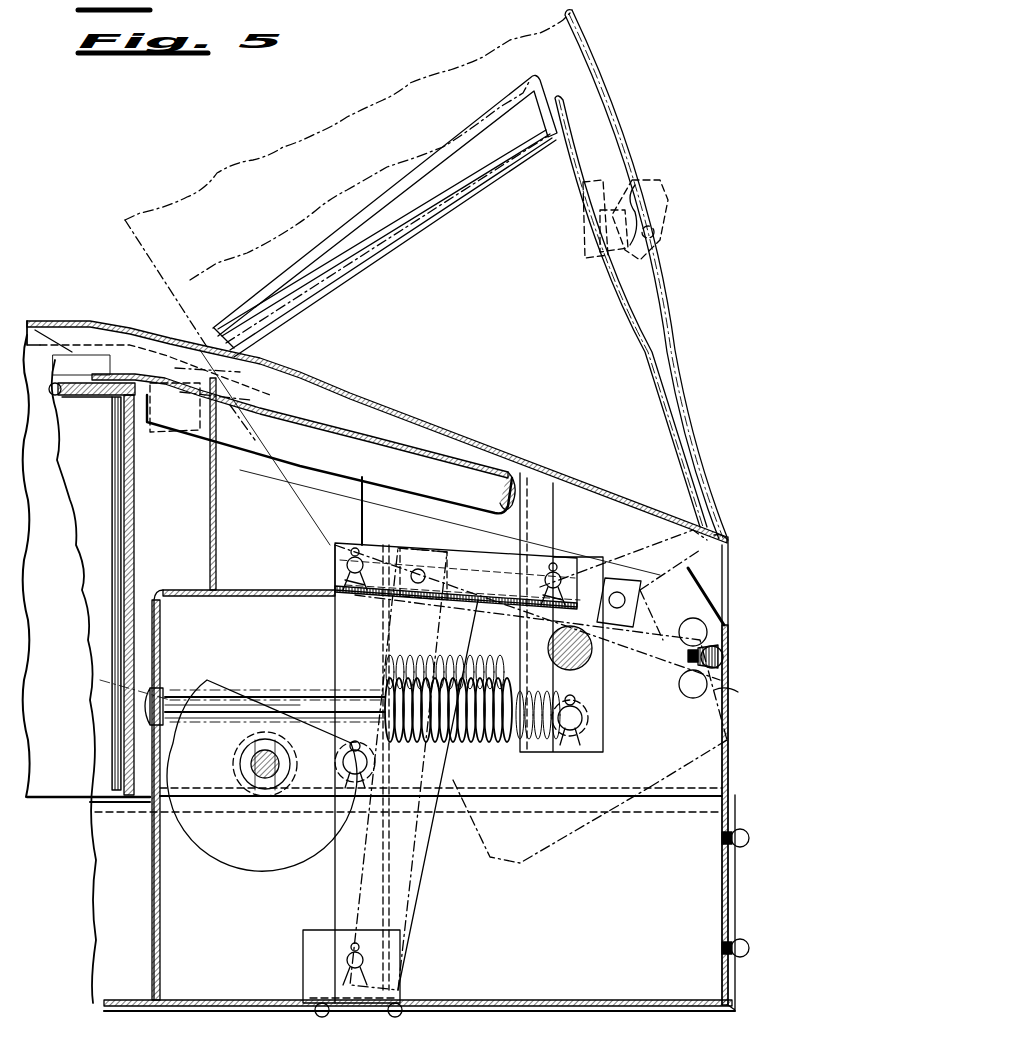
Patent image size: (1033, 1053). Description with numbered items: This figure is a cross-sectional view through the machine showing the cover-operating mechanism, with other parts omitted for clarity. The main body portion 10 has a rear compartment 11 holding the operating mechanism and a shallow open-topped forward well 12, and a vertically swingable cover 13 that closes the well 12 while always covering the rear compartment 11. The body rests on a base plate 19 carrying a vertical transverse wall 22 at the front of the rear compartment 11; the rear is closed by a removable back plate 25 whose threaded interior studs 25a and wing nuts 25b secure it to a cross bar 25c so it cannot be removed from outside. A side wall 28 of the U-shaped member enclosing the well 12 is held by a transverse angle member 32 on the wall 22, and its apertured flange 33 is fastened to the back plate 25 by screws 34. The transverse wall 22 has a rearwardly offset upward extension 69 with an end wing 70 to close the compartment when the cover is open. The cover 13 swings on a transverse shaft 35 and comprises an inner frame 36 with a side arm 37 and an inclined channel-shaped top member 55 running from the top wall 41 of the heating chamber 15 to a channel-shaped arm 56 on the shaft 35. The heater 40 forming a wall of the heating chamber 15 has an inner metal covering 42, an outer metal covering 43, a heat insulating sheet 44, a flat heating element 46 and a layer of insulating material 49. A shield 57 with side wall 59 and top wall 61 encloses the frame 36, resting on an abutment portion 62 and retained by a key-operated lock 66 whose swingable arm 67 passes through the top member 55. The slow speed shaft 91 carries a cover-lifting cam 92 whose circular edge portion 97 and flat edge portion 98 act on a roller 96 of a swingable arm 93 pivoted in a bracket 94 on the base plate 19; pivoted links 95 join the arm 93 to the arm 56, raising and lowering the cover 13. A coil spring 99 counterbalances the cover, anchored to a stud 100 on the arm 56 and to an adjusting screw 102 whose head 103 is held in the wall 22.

The main body portion 10 is at (242, 1014).
The rear compartment 11 is at (550, 898).
The forward compartment or well 12 is at (125, 915).
The cover 13 is at (620, 96).
The heating chamber 15 is at (79, 669).
The base plate 19 is at (252, 1000).
The vertical transverse wall 22 is at (152, 876).
The back plate 25 is at (730, 763).
The threaded interior studs 25a is at (700, 655).
The wing nuts 25b is at (680, 690).
The cross bar 25c is at (740, 692).
The side wall of U-shaped member 28 is at (95, 957).
The transverse angle member 32 is at (150, 822).
The apertured flanges 33 is at (734, 905).
The screws 34 is at (745, 843).
The transverse shaft 35 is at (558, 638).
The inner frame 36 is at (583, 128).
The side arm 37 is at (78, 345).
The heater 40 is at (440, 196).
The top wall 41 is at (548, 80).
The inner metal covering 42 is at (114, 505).
The outer metal covering 43 is at (430, 232).
The heat insulating sheet 44 is at (54, 384).
The flat heating element 46 is at (118, 545).
The layer of insulating material 49 is at (126, 556).
The inclined longitudinal top member 55 is at (640, 312).
The channel-shaped arm 56 is at (612, 552).
The shield 57 is at (680, 368).
The side wall of shield 59 is at (725, 565).
The top wall of shield 61 is at (690, 402).
The abutment portion 62 is at (46, 324).
The key-operated lock 66 is at (665, 198).
The swingable arm 67 is at (578, 192).
The vertical upward extension 69 is at (218, 530).
The end wing 70 is at (364, 523).
The slow speed shaft 91 is at (250, 766).
The cover-lifting cam 92 is at (228, 865).
The swingable arm 93 is at (335, 628).
The bracket 94 is at (405, 971).
The pivoted links 95 is at (450, 548).
The roller 96 is at (340, 745).
The circular edge portion 97 is at (265, 872).
The flat edge portion 98 is at (300, 712).
The coil spring 99 is at (422, 665).
The stud 100 is at (590, 723).
The adjusting screw 102 is at (275, 688).
The head 103 is at (158, 680).